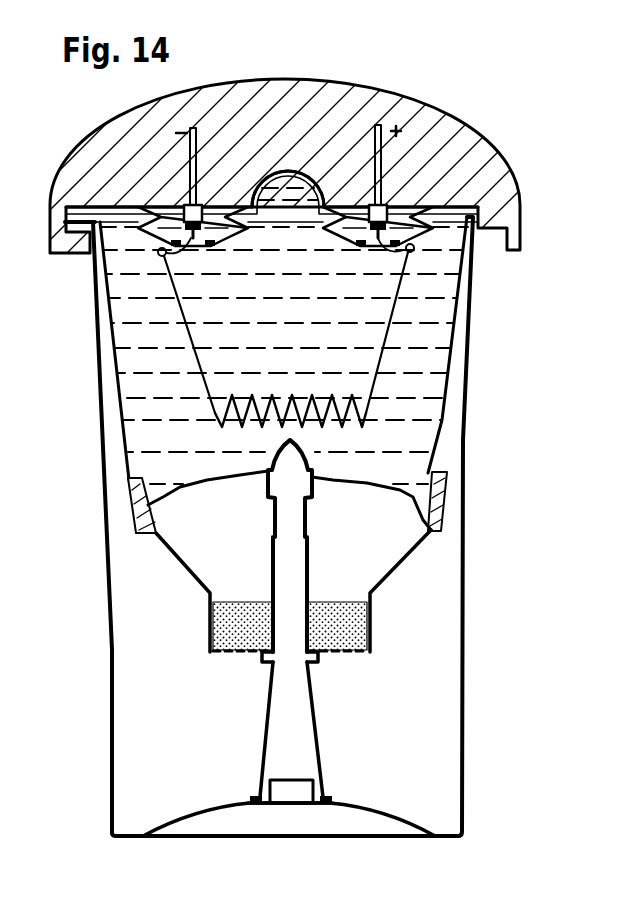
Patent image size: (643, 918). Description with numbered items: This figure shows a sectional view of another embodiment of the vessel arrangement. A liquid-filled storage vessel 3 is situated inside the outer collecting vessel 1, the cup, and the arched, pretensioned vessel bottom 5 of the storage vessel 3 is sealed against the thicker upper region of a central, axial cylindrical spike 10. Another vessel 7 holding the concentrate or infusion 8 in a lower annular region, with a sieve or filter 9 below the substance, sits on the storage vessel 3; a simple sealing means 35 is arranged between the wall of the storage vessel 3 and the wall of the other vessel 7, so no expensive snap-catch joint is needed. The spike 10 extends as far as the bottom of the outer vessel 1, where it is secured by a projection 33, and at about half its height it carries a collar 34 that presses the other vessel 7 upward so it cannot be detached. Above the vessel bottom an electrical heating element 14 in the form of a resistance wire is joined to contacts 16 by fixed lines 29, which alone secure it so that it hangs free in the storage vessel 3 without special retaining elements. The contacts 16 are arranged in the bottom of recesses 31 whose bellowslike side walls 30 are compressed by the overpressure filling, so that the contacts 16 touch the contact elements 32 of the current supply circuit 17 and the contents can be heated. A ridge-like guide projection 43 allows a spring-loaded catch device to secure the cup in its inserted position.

The collecting vessel 1 is at (463, 750).
The storage vessel 3 is at (445, 433).
The vessel bottom 5 is at (207, 486).
The other vessel 7 is at (188, 577).
The concentrate or infusion 8 is at (370, 622).
The sieve or filter 9 is at (333, 651).
The cylindrical spike 10 is at (326, 560).
The electrical heating element 14 is at (227, 393).
The contacts 16 is at (191, 240).
The current supply circuit 17 is at (406, 100).
The fixed lines 29 is at (188, 328).
The bellowslike side walls 30 is at (328, 234).
The recesses 31 is at (407, 213).
The contact elements 32 is at (200, 153).
The projection 33 is at (287, 780).
The collar 34 is at (260, 658).
The sealing means 35 is at (442, 503).
The ridge-like guide projection 43 is at (276, 172).